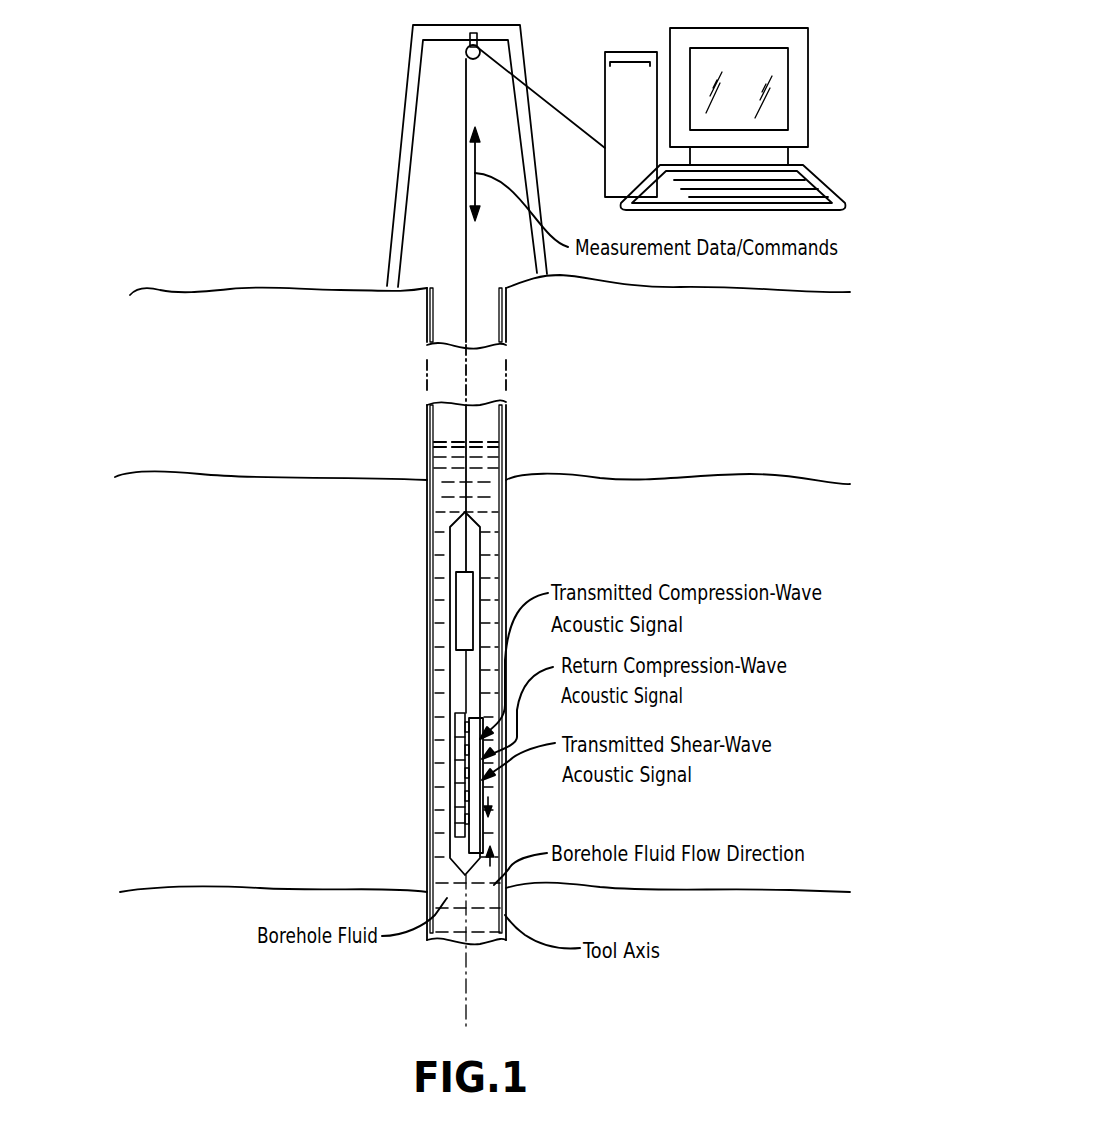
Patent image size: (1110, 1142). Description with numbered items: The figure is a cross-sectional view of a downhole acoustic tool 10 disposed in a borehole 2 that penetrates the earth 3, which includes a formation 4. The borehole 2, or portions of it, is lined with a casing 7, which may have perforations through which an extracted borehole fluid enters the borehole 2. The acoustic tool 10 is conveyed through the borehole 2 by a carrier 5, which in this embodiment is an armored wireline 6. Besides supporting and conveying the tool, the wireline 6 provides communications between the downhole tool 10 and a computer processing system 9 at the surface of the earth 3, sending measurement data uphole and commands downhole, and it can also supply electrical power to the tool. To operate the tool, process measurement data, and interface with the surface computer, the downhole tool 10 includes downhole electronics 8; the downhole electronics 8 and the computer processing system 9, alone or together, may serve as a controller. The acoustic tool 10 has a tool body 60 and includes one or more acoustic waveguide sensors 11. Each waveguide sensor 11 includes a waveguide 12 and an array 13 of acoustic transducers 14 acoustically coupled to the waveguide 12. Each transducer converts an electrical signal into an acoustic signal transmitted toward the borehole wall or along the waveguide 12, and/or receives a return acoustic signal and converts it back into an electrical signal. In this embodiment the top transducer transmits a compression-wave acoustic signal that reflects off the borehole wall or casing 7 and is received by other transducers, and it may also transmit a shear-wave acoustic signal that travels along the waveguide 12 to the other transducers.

The borehole 2 is at (427, 308).
The earth 3 is at (238, 386).
The formation 4 is at (195, 636).
The carrier 5 is at (463, 434).
The armored wireline 6 is at (465, 256).
The casing 7 is at (506, 428).
The downhole electronics 8 is at (463, 595).
The computer processing system 9 is at (605, 82).
The downhole acoustic tool 10 is at (431, 693).
The acoustic waveguide sensor 11 is at (478, 717).
The waveguide 12 is at (477, 847).
The array of acoustic transducers 13 is at (306, 786).
The acoustic transducers 14 is at (470, 822).
The tool body 60 is at (483, 570).